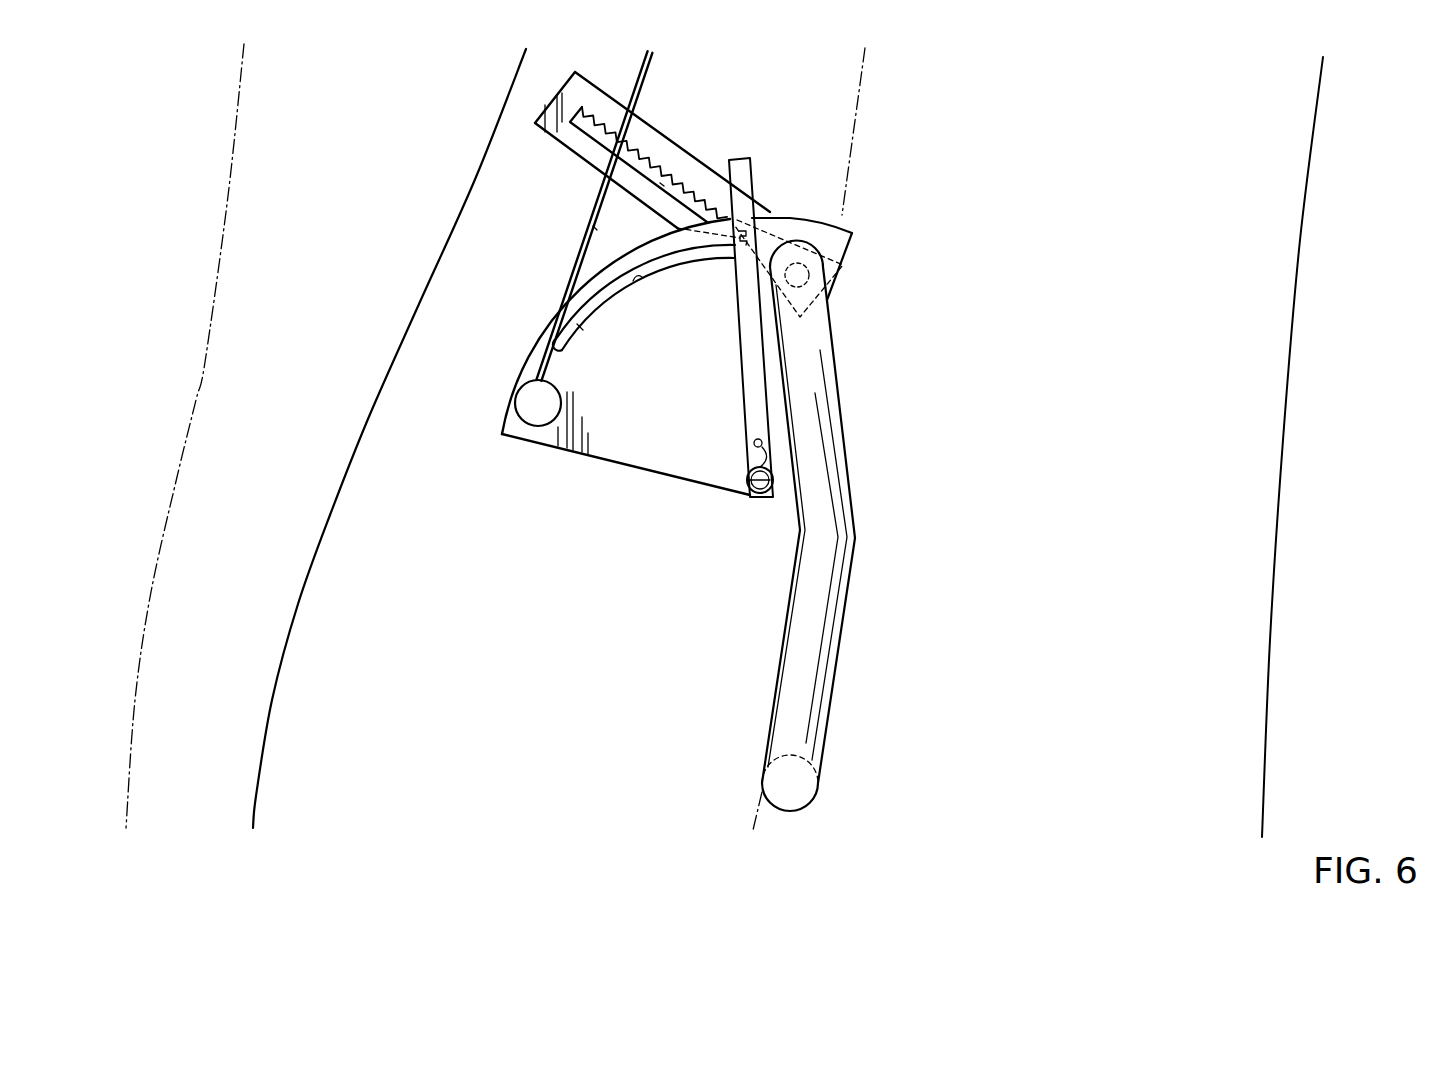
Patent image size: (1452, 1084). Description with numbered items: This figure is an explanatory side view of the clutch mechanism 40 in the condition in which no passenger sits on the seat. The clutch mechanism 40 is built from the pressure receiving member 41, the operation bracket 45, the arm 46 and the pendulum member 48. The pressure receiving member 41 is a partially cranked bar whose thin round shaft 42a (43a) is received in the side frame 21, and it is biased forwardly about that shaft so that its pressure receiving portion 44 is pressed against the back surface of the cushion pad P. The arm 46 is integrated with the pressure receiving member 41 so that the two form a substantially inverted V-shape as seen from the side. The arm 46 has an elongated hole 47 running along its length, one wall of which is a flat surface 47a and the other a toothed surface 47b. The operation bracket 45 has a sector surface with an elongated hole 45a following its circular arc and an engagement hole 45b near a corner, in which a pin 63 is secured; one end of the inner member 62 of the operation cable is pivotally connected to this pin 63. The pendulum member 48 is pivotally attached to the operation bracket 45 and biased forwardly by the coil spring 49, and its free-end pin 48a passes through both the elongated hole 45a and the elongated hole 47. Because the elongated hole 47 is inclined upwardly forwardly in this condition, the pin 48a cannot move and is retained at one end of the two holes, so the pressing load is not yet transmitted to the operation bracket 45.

The side frame 21 is at (1243, 793).
The clutch mechanism 40 is at (496, 187).
The pressure receiving member 41 is at (878, 614).
The thin round shaft 42a is at (871, 269).
The thin round shaft 43a is at (800, 277).
The pressure receiving portion 44 is at (800, 787).
The operation bracket 45 is at (600, 447).
The elongated hole 45a is at (584, 328).
The engagement hole 45b is at (640, 279).
The arm 46 is at (592, 95).
The elongated hole 47 is at (637, 157).
The flat surface 47a is at (595, 228).
The toothed surface 47b is at (595, 228).
The pendulum member 48 is at (752, 390).
The pin 48a is at (745, 240).
The coil spring 49 is at (752, 456).
The inner member 62 is at (597, 206).
The pin 63 is at (535, 410).
The cushion pad P is at (815, 145).